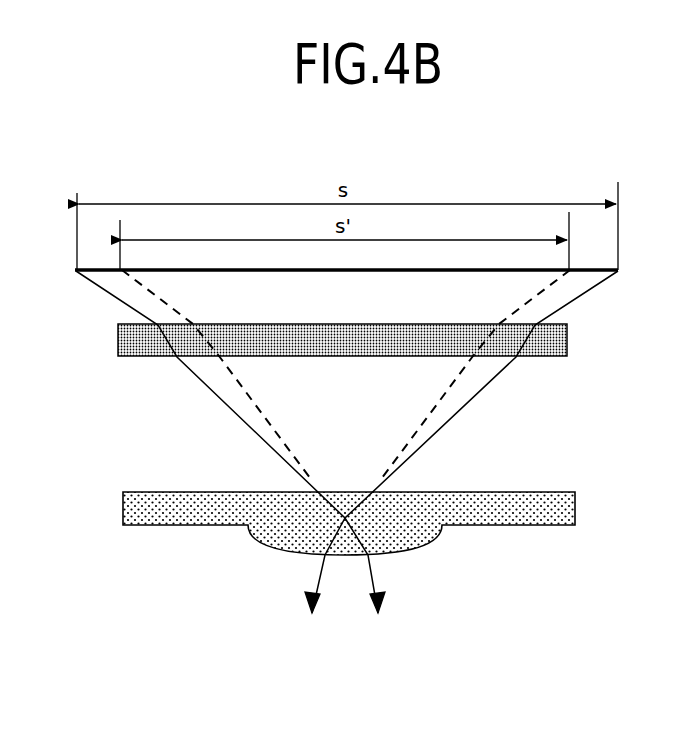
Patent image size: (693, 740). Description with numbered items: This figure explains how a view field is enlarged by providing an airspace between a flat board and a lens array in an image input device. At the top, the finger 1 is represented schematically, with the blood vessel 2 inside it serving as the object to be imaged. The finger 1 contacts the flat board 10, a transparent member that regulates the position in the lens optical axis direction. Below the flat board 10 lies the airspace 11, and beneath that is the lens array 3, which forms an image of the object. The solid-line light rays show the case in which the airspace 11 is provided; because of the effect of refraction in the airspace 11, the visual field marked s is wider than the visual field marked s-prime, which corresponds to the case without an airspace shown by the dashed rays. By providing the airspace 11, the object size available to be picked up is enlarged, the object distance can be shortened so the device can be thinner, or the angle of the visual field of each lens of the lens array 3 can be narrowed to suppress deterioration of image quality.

The finger 1 is at (592, 295).
The blood vessel 2 is at (583, 262).
The lens array 3 is at (553, 505).
The flat board 10 is at (565, 337).
The airspace 11 is at (558, 415).